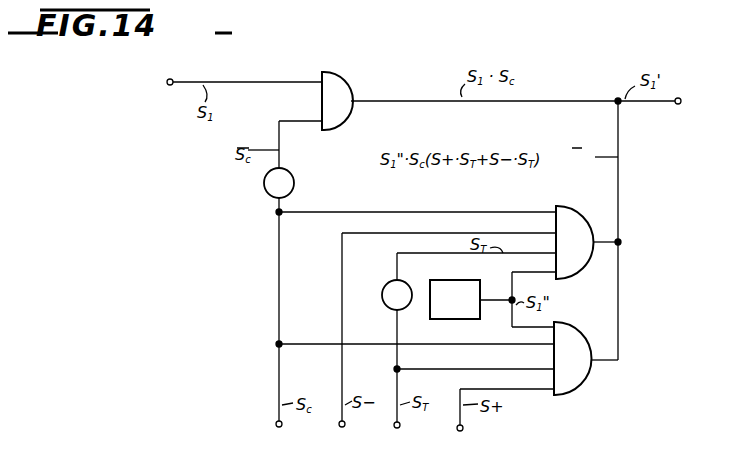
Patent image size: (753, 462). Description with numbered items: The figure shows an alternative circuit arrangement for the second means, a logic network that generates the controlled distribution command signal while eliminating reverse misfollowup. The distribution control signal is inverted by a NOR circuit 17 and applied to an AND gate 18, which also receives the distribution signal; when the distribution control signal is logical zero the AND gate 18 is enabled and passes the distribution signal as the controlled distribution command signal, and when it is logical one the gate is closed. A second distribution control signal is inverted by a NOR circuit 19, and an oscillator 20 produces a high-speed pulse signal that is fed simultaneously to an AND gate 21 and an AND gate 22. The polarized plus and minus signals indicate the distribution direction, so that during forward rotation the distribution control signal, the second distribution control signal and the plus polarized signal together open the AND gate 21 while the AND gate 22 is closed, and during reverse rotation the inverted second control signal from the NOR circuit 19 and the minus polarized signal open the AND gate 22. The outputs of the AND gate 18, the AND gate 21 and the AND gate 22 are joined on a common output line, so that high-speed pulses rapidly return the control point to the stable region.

The NOR circuit 17 is at (268, 193).
The AND gate 18 is at (348, 78).
The NOR circuit 19 is at (386, 305).
The oscillator 20 is at (466, 282).
The AND gate 21 is at (582, 333).
The AND gate 22 is at (578, 212).